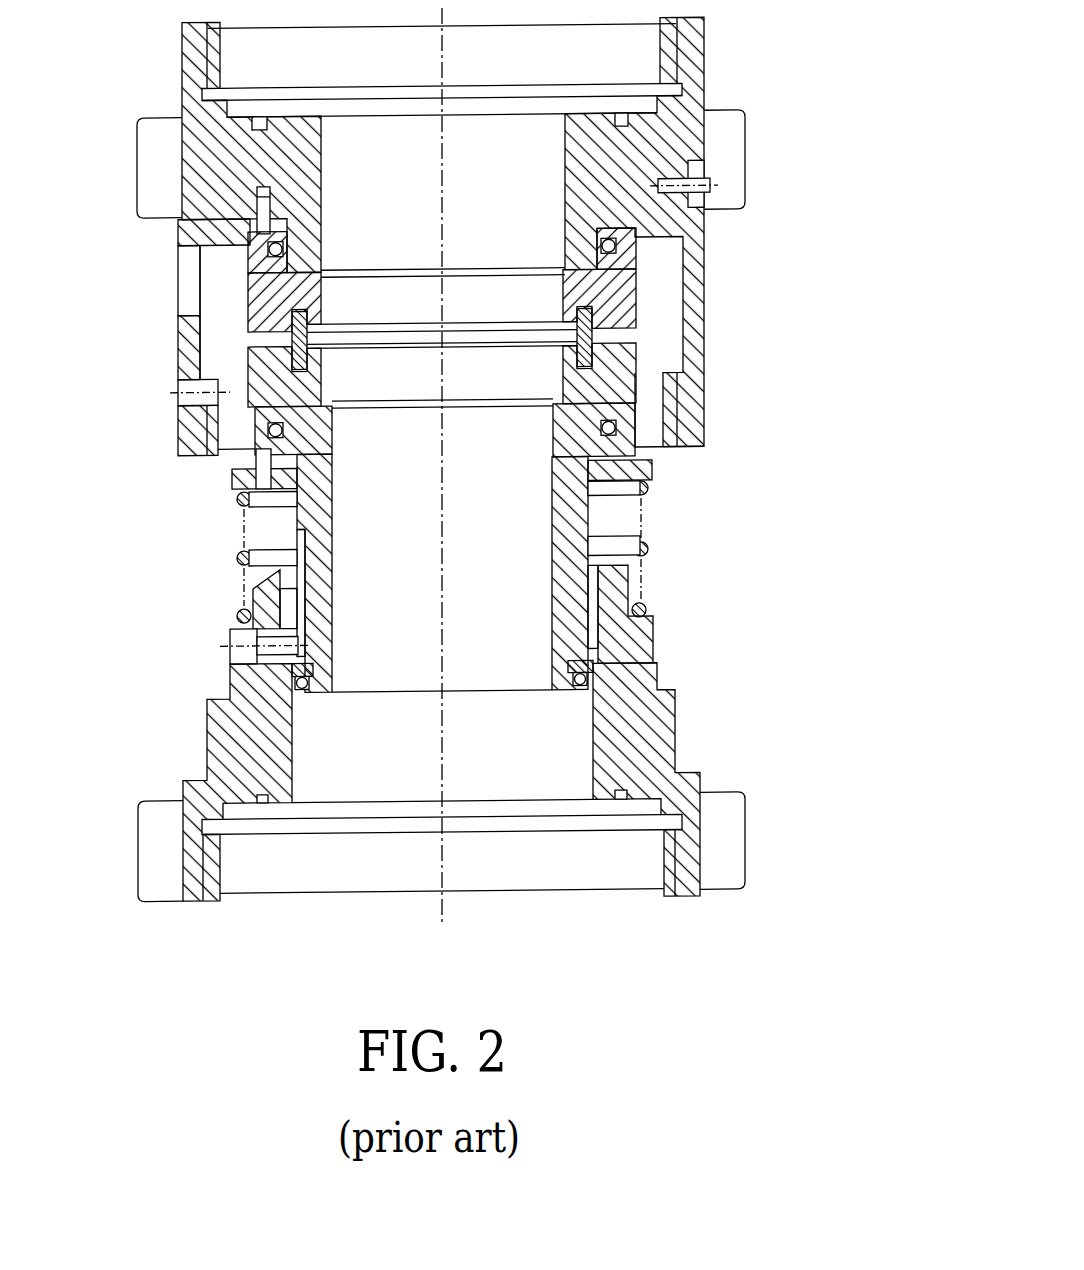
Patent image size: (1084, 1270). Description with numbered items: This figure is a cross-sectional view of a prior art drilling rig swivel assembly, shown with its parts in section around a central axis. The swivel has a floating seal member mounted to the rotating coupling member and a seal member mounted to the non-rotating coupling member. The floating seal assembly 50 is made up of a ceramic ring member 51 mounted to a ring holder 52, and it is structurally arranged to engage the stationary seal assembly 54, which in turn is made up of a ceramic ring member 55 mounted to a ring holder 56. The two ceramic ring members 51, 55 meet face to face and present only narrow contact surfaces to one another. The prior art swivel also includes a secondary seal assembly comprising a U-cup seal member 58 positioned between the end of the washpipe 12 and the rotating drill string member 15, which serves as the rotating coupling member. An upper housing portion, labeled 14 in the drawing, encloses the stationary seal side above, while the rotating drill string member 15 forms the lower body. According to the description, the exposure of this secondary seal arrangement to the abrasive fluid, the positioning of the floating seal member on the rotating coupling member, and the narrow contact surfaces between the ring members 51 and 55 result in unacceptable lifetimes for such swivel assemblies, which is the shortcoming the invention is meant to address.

The upper housing 14 is at (677, 120).
The rotating drill string member 15 is at (683, 790).
The washpipe 12 is at (560, 578).
The floating seal assembly 50 is at (715, 553).
The stationary seal assembly 54 is at (747, 287).
The ceramic ring member 51 is at (590, 353).
The ring holder 52 is at (610, 385).
The ceramic ring member 55 is at (637, 325).
The ring holder 56 is at (618, 263).
The U-cup seal member 58 is at (593, 668).